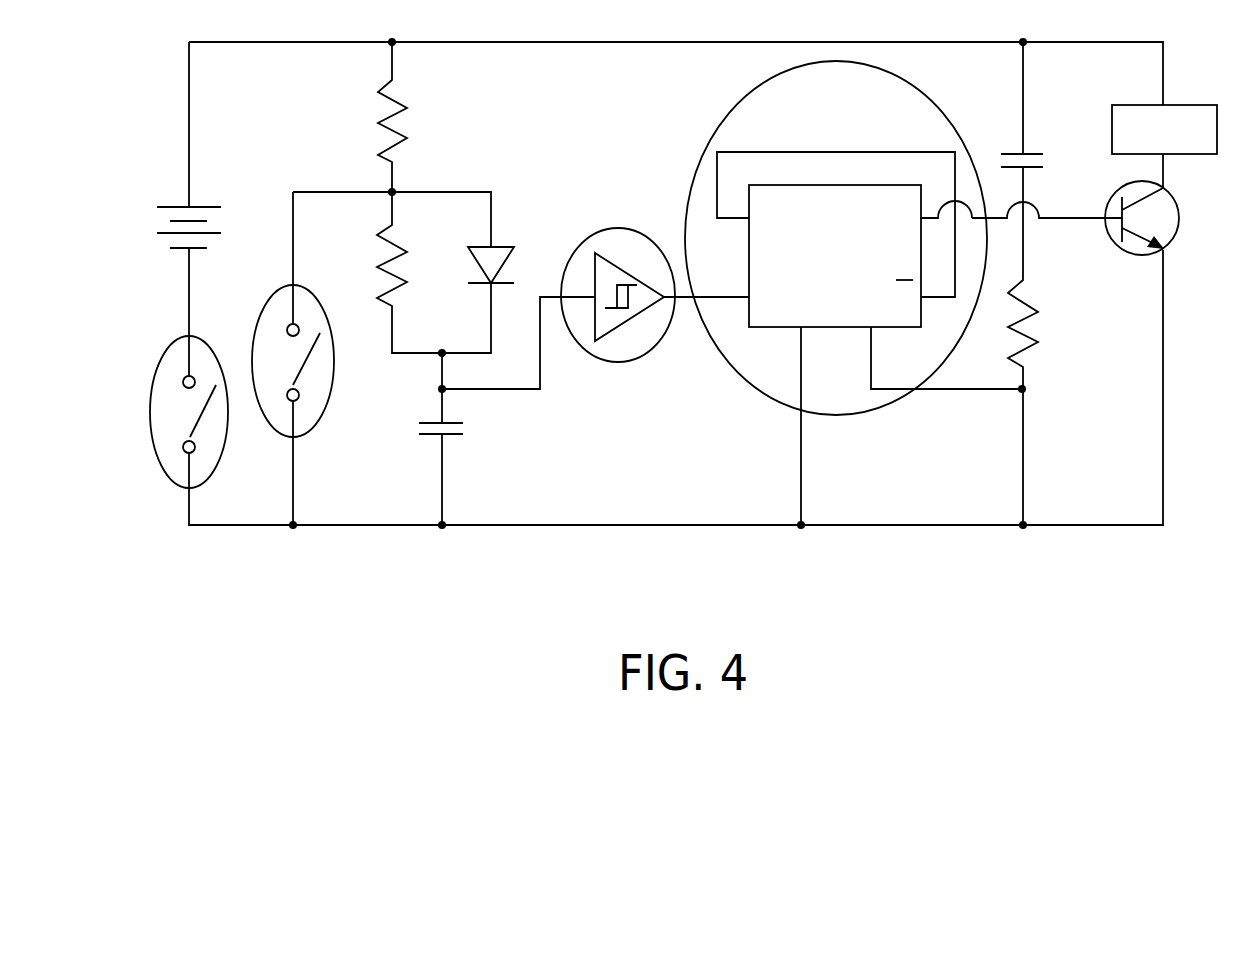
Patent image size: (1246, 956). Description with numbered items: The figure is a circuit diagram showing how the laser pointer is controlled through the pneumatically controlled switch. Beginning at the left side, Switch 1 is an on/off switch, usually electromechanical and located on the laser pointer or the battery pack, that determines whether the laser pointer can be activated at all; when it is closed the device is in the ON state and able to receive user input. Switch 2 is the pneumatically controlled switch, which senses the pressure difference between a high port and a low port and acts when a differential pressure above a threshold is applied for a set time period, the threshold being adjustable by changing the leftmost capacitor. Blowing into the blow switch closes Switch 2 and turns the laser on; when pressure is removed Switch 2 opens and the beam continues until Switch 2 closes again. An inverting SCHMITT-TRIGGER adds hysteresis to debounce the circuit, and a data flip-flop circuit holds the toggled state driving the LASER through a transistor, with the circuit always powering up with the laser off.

The Switch 1 is at (160, 467).
The Switch 2 is at (317, 413).
The inverting Schmitt trigger SCHMITT-TRIGGER is at (600, 362).
The laser LASER is at (1164, 129).